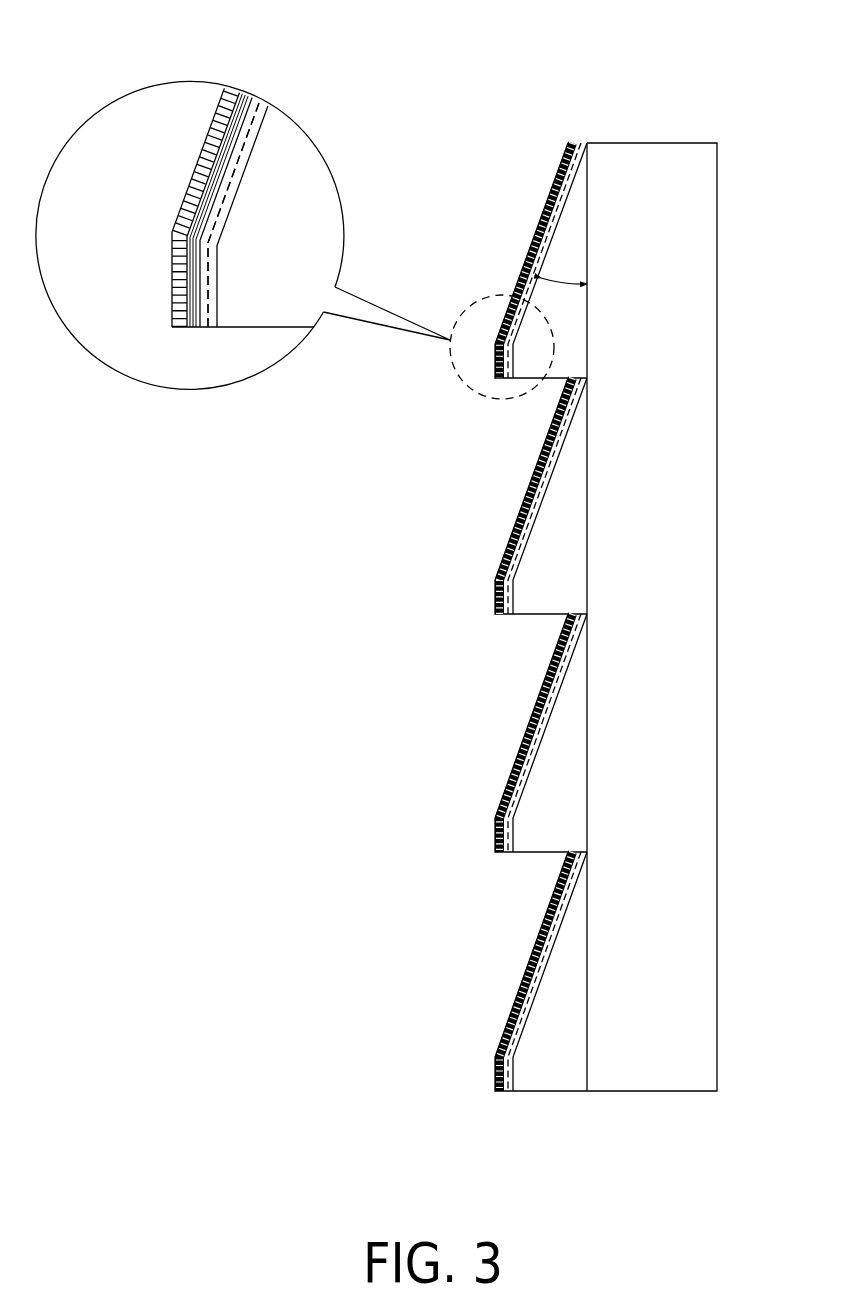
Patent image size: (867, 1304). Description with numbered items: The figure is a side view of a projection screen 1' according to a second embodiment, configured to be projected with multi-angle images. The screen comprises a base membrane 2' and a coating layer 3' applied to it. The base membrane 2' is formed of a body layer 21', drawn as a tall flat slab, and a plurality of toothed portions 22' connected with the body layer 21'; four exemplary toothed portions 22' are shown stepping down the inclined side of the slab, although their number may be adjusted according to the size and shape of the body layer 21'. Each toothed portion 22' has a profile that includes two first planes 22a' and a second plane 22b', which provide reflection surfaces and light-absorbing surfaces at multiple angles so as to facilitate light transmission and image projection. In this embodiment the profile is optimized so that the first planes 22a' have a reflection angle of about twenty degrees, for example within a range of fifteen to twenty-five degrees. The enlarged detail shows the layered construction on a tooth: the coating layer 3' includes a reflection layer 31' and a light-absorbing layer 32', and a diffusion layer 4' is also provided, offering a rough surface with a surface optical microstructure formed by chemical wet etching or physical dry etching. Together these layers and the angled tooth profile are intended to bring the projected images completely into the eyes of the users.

The projection screen 1' is at (397, 600).
The base membrane 2' is at (606, 671).
The body layer 21' is at (652, 649).
The toothed portions 22' is at (541, 649).
The first planes 22a' is at (271, 203).
The second plane 22b' is at (243, 203).
The coating layer 3' is at (167, 203).
The reflection layer 31' is at (178, 203).
The light-absorbing layer 32' is at (185, 203).
The diffusion layer 4' is at (243, 180).